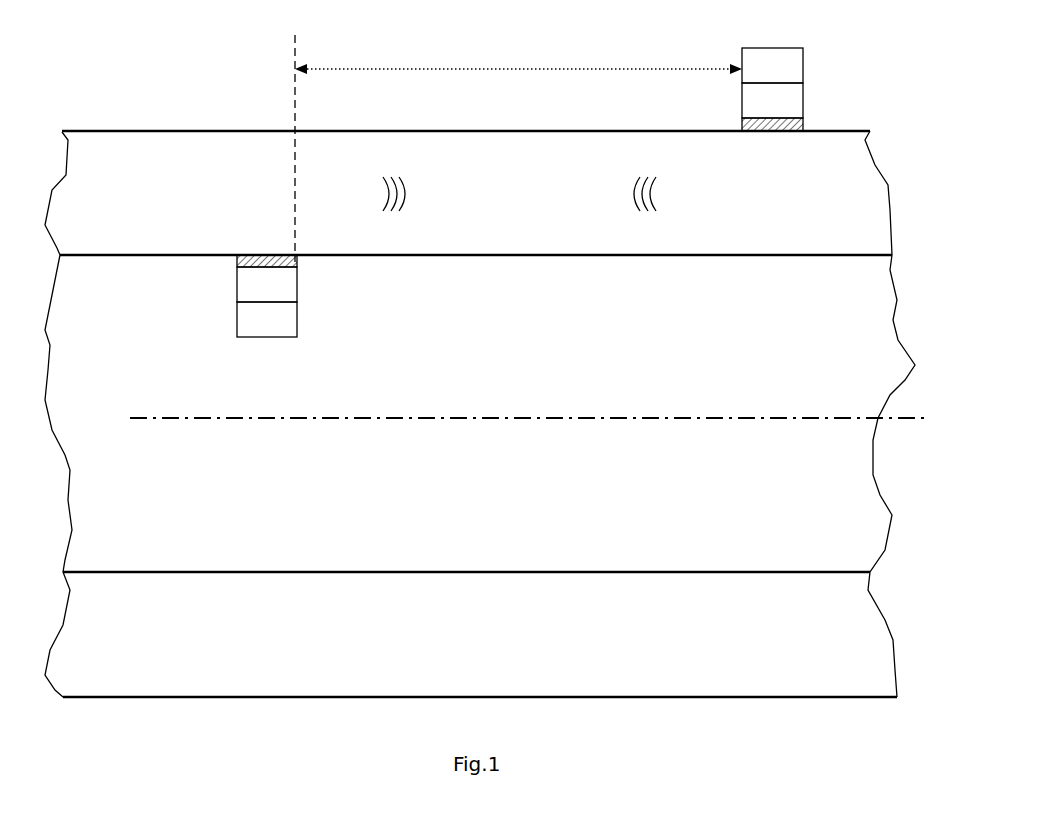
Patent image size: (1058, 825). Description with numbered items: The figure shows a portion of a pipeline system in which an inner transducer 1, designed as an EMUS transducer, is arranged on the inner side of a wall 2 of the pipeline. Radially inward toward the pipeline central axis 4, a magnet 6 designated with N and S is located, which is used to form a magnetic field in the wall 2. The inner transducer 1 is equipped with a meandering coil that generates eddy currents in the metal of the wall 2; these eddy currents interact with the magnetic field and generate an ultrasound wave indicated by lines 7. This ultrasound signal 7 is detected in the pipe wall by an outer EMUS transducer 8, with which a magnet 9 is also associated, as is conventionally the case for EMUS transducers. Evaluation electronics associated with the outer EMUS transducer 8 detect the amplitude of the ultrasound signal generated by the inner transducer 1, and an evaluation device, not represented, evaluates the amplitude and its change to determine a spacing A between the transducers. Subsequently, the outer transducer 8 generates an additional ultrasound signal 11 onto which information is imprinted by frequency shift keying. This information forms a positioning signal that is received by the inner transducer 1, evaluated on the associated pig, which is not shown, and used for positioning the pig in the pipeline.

The inner transducer 1 is at (320, 320).
The wall 2 is at (543, 222).
The pipeline central axis 4 is at (903, 417).
The magnet 6 is at (290, 322).
The ultrasound wave 7 is at (410, 183).
The outer EMUS transducer 8 is at (745, 125).
The magnet 9 is at (766, 68).
The additional ultrasound signal 11 is at (660, 196).
The spacing A is at (541, 69).